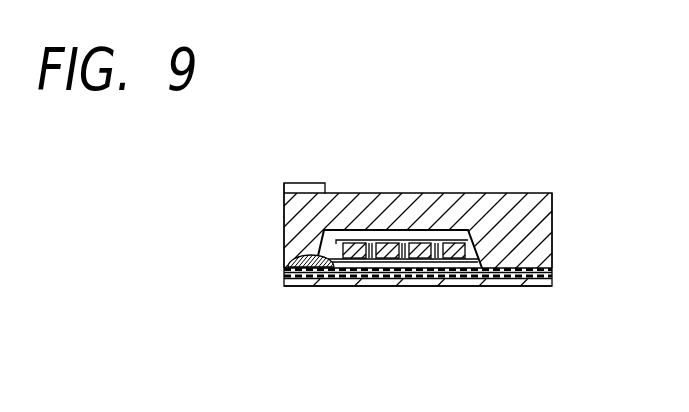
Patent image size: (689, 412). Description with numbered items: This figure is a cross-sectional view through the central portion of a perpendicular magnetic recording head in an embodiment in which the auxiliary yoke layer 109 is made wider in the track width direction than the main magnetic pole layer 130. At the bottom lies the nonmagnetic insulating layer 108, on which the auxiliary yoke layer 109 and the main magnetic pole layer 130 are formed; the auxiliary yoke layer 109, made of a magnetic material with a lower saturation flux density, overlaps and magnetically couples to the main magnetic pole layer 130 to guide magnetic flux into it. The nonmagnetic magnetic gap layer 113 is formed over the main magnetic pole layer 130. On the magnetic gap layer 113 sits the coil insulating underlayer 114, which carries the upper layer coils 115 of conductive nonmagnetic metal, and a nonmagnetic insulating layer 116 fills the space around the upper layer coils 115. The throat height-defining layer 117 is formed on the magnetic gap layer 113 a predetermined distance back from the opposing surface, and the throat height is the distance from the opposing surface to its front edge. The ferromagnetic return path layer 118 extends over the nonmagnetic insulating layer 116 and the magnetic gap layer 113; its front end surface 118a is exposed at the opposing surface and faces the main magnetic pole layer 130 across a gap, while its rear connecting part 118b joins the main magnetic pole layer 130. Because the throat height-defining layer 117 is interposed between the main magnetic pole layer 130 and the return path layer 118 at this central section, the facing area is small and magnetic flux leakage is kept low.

The nonmagnetic insulating layer 108 is at (370, 318).
The auxiliary yoke layer 109 is at (284, 285).
The magnetic gap layer 113 is at (284, 266).
The coil insulating underlayer 114 is at (470, 230).
The upper layer coils 115 is at (399, 230).
The nonmagnetic insulating layer 116 is at (343, 243).
The throat height-defining layer 117 is at (313, 255).
The return path layer 118 is at (422, 198).
The front end surface 118a is at (284, 205).
The connecting part 118b is at (528, 216).
The main magnetic pole layer 130 is at (292, 268).